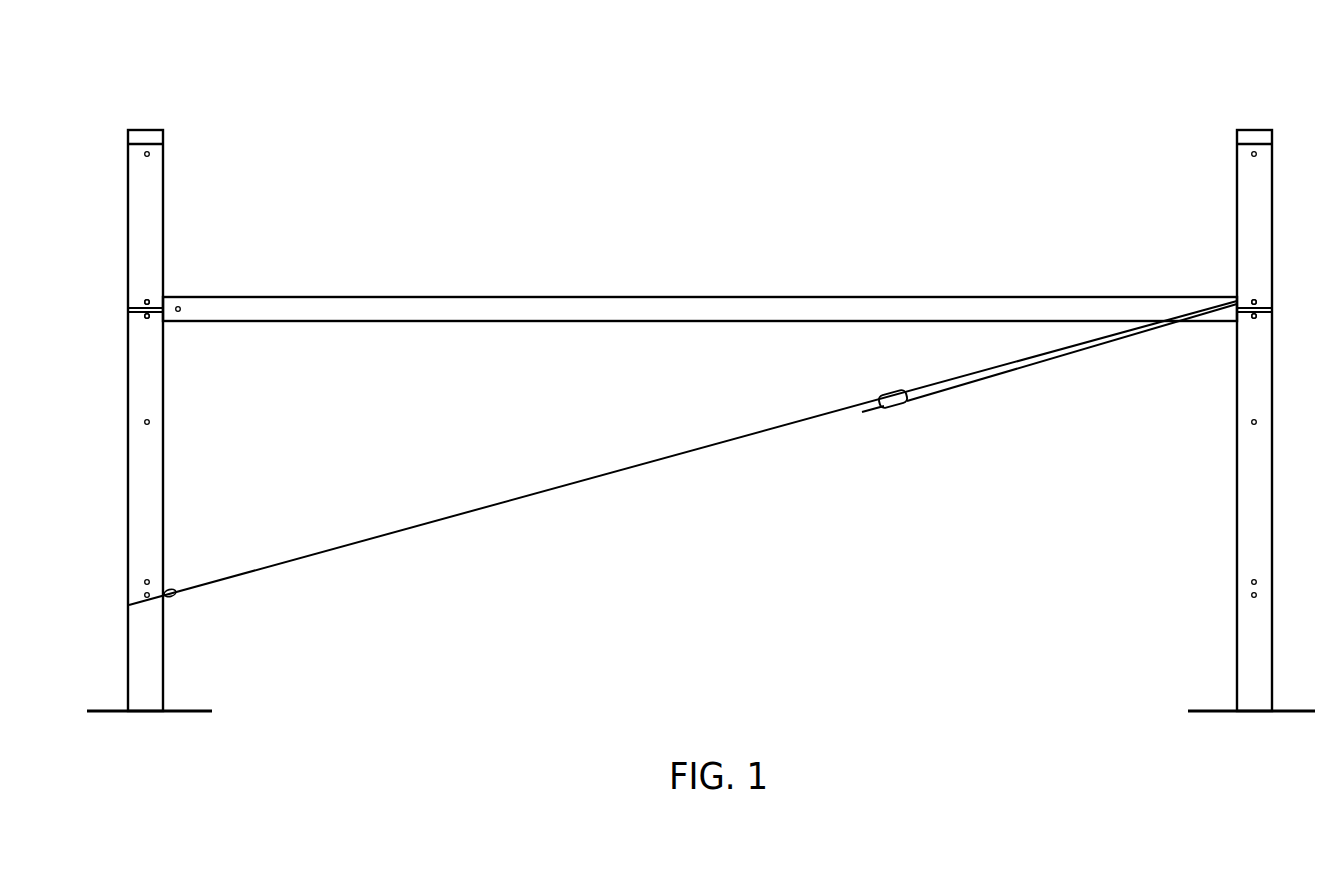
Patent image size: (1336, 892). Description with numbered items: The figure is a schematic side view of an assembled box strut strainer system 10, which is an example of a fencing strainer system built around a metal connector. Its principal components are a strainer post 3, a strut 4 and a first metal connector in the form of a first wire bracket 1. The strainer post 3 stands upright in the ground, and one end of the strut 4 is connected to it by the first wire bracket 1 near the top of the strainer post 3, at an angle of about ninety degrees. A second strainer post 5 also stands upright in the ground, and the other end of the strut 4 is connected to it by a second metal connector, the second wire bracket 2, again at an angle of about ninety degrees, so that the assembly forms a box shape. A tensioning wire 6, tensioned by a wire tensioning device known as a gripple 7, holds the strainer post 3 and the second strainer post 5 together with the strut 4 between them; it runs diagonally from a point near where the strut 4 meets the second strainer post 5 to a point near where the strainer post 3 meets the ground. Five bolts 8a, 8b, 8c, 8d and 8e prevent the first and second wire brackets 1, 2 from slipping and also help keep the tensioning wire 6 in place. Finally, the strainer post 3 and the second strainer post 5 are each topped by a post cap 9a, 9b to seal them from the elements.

The first wire bracket 1 is at (152, 306).
The second wire bracket 2 is at (1240, 302).
The strainer post 3 is at (147, 388).
The strut 4 is at (635, 304).
The second strainer post 5 is at (1257, 514).
The tensioning wire 6 is at (740, 442).
The gripple 7 is at (898, 410).
The bolt 8a is at (145, 302).
The bolt 8b is at (145, 316).
The bolt 8c is at (145, 596).
The bolt 8d is at (1256, 302).
The bolt 8e is at (1256, 316).
The post cap 9a is at (147, 131).
The post cap 9b is at (1254, 131).
The box strut strainer system 10 is at (861, 138).